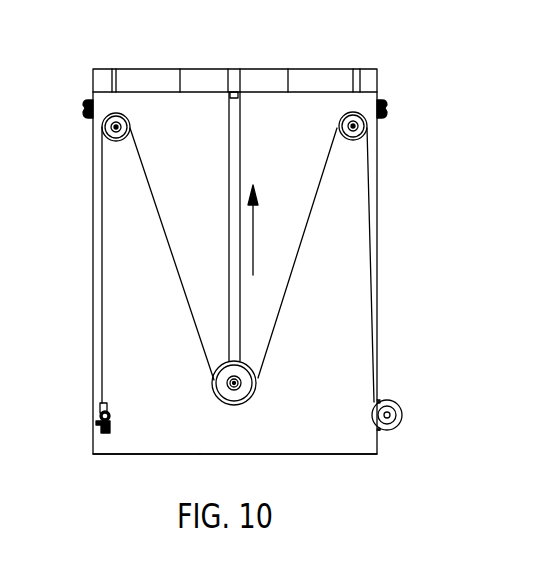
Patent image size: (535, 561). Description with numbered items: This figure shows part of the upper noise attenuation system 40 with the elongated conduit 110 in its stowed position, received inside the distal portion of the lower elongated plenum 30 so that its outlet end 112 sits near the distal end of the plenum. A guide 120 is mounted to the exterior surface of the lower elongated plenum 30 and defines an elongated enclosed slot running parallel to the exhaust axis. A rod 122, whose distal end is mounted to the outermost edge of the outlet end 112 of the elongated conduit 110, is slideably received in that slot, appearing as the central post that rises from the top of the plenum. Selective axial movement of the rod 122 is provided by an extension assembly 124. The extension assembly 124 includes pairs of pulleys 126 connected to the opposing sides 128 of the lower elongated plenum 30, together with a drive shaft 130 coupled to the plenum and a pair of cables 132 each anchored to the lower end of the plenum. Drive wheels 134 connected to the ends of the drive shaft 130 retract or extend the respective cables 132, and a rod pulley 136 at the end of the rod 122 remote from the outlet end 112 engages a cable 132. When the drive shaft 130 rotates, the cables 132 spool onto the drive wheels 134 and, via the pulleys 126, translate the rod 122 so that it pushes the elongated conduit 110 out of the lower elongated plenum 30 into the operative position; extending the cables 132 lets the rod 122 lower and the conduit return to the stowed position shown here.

The lower elongated plenum 30 is at (335, 442).
The upper noise attenuation system 40 is at (433, 101).
The elongated conduit 110 is at (320, 85).
The outlet end 112 is at (372, 83).
The guide 120 is at (232, 92).
The rod 122 is at (235, 143).
The extension assembly 124 is at (403, 317).
The pulleys 126 is at (367, 130).
The opposing sides 128 is at (133, 440).
The drive shaft 130 is at (380, 400).
The cables 132 is at (285, 297).
The drive wheels 134 is at (402, 420).
The rod pulley 136 is at (242, 389).